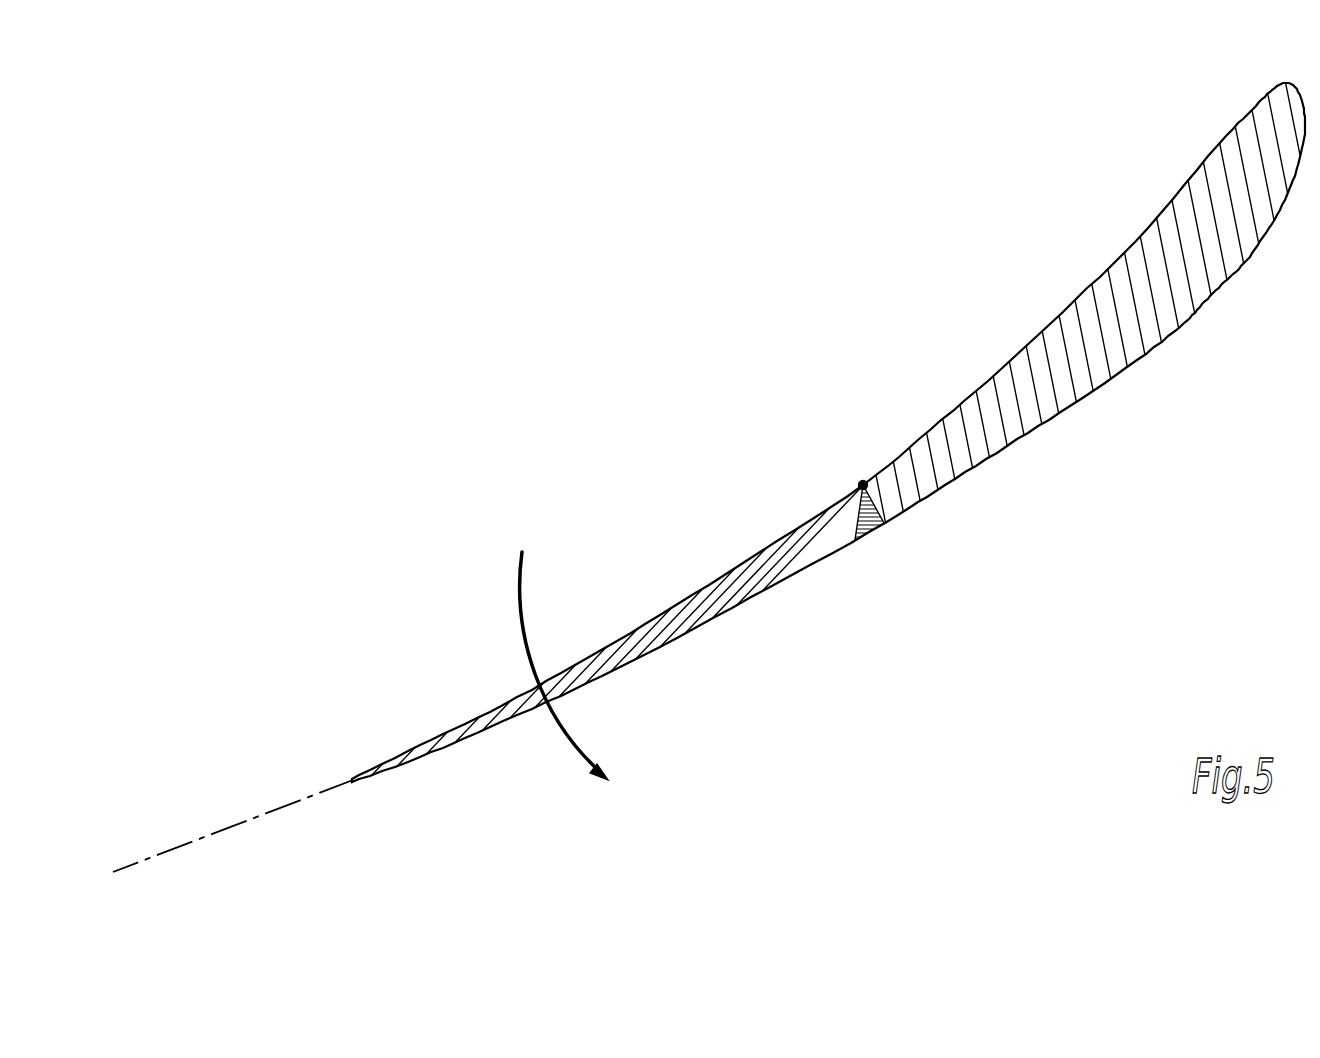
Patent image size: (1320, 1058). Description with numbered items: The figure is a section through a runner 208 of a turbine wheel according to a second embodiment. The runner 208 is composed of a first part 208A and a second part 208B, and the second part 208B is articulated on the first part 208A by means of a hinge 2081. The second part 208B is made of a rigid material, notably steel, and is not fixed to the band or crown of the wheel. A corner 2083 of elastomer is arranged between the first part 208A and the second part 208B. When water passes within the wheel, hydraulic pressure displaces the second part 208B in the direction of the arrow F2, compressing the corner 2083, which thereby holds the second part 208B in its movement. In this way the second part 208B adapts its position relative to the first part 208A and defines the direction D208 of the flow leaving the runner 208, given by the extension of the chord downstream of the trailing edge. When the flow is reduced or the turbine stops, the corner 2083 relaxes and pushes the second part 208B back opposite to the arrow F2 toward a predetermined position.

The runner 208 is at (590, 233).
The first part 208A is at (983, 435).
The second part 208B is at (763, 575).
The hinge 2081 is at (863, 485).
The corner 2083 is at (870, 522).
The direction of the flow leaving the runner D208 is at (229, 826).
The arrow F2 is at (578, 674).